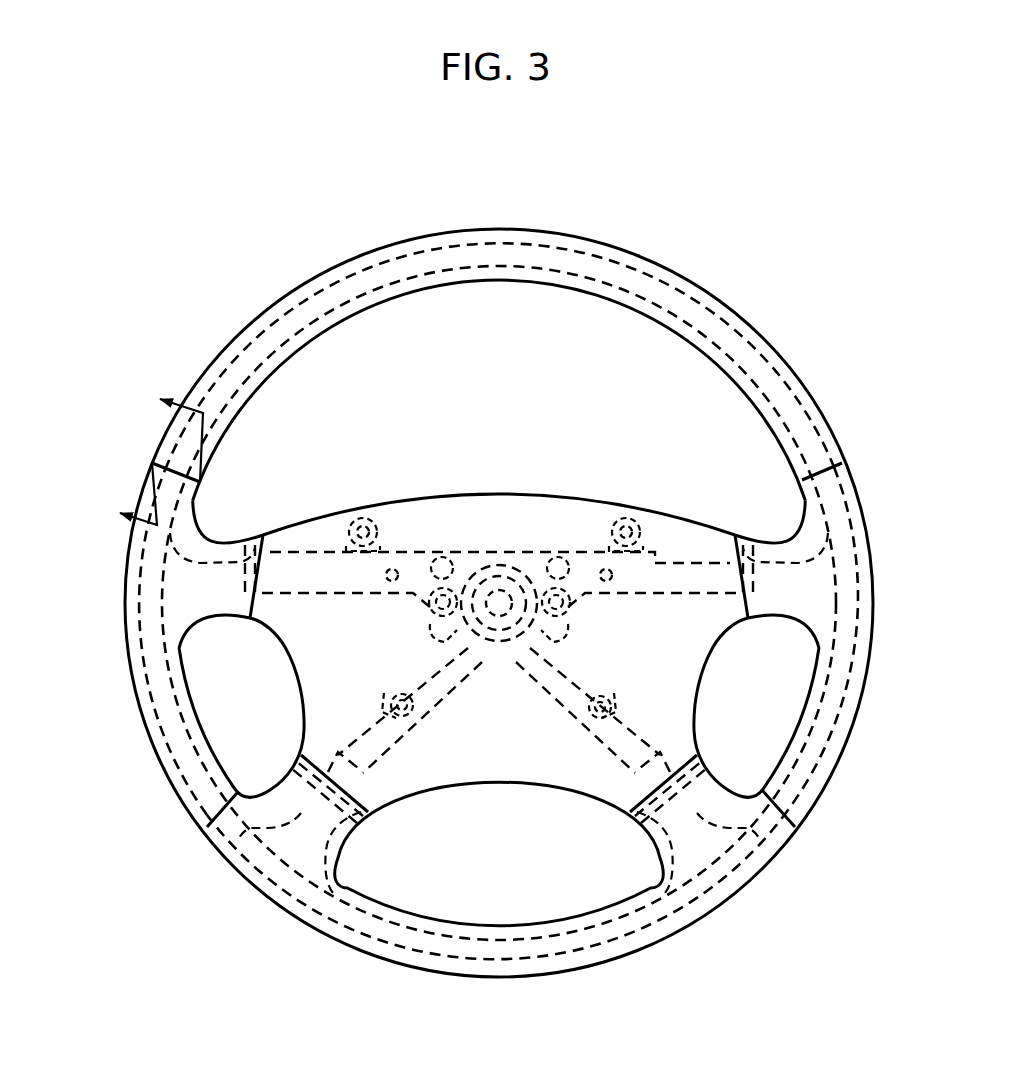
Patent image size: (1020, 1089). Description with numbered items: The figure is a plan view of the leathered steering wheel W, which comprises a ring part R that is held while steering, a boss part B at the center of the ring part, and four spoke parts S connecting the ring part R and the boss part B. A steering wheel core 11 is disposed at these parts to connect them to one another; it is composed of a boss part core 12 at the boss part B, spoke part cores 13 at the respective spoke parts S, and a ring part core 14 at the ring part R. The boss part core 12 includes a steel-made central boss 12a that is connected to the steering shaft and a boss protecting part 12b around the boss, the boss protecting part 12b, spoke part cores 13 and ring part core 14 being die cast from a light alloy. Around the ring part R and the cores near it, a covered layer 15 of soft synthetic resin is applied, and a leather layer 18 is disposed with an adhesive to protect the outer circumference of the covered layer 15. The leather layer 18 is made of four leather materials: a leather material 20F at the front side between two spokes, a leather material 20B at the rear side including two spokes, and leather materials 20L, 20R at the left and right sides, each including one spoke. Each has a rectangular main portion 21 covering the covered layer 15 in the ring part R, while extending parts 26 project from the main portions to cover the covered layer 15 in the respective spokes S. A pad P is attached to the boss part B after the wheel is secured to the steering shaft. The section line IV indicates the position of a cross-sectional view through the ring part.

The leathered steering wheel W is at (776, 272).
The ring part R is at (330, 243).
The boss part B is at (463, 479).
The spoke parts S is at (208, 614).
The pad P is at (385, 512).
The steering wheel core 11 is at (653, 367).
The boss part core 12 is at (618, 415).
The boss 12a is at (500, 553).
The boss protecting part 12b is at (537, 560).
The spoke part cores 13 is at (207, 537).
The ring part core 14 is at (748, 400).
The covered layer 15 is at (830, 427).
The leather layer 18 is at (616, 252).
The leather material 20F is at (440, 242).
The leather material 20R is at (860, 640).
The leather material 20L is at (183, 777).
The leather material 20B is at (487, 964).
The main portion 21 is at (148, 702).
The extending parts 26 is at (230, 540).
The section line IV- IV is at (141, 454).